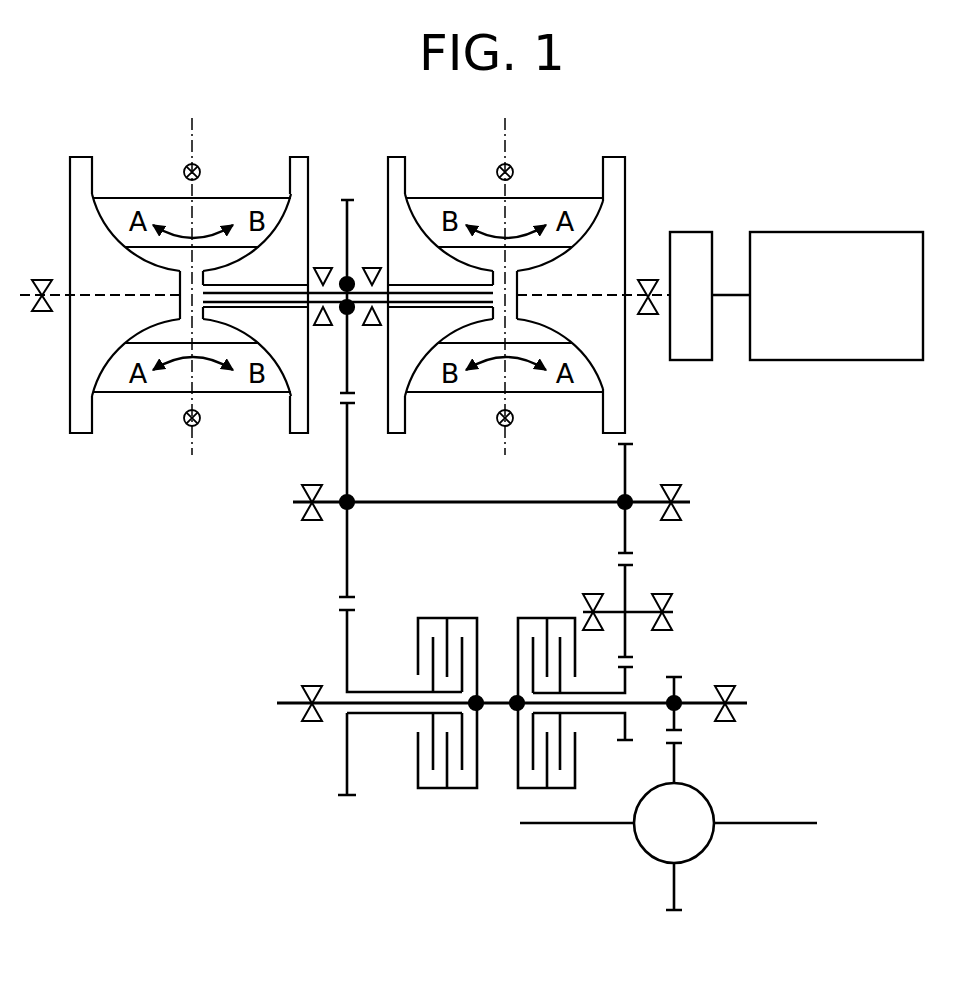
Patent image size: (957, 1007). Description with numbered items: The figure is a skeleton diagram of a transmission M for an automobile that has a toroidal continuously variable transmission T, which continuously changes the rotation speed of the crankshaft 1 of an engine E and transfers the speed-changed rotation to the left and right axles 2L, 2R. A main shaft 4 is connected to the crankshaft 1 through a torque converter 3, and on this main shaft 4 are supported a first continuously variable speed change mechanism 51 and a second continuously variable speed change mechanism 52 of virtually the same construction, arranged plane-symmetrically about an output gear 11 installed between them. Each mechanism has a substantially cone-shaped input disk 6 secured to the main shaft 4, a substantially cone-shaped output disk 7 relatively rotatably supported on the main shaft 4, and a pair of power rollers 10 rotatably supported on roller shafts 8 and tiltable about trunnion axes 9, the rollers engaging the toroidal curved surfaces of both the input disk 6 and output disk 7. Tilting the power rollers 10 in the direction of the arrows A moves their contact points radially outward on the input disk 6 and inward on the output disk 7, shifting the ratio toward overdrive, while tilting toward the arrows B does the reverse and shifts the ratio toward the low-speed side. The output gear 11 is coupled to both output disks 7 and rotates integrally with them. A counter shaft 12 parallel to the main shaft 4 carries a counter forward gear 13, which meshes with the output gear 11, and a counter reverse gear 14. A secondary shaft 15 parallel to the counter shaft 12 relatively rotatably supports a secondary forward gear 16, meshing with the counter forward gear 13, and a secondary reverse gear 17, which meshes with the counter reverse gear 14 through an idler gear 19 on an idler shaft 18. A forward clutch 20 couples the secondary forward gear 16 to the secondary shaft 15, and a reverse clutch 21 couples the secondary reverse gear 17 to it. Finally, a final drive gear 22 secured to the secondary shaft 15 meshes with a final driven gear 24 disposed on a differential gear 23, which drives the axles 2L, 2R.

The crankshaft 1 is at (730, 293).
The left axle 2L is at (593, 825).
The right axle 2R is at (768, 822).
The torque converter 3 is at (690, 232).
The main shaft 4 is at (292, 301).
The input disk 6 is at (82, 190).
The output disk 7 is at (309, 172).
The roller shaft 8 is at (197, 144).
The trunnion axis 9 is at (184, 166).
The power roller 10 is at (118, 210).
The output gear 11 is at (356, 390).
The counter shaft 12 is at (482, 503).
The counter forward gear 13 is at (352, 404).
The counter reverse gear 14 is at (619, 447).
The secondary shaft 15 is at (492, 700).
The secondary forward gear 16 is at (338, 609).
The secondary reverse gear 17 is at (632, 664).
The idler shaft 18 is at (639, 608).
The idler gear 19 is at (618, 565).
The forward clutch 20 is at (437, 615).
The reverse clutch 21 is at (540, 615).
The final drive gear 22 is at (683, 732).
The differential gear 23 is at (713, 797).
The final driven gear 24 is at (668, 746).
The first continuously variable speed change mechanism 51 is at (538, 182).
The second continuously variable speed change mechanism 52 is at (234, 185).
The toroidal continuously variable transmission T is at (358, 142).
The transmission M is at (287, 513).
The engine E is at (854, 306).